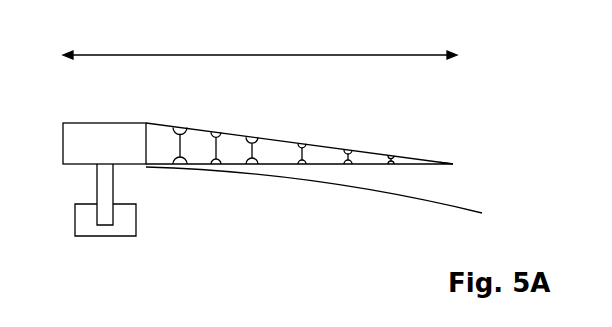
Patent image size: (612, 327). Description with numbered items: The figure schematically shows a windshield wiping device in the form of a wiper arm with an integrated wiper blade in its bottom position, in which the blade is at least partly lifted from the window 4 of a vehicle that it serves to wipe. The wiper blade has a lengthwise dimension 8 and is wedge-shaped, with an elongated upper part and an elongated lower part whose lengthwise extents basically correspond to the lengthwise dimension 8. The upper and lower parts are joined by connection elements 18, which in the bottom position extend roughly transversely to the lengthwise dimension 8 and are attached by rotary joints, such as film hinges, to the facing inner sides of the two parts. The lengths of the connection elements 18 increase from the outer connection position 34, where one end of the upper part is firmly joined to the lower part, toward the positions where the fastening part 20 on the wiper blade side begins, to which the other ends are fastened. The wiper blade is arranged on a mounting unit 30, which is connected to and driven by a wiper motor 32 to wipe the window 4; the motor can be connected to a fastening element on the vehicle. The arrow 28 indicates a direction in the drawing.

The window 4 is at (447, 206).
The lengthwise dimension 8 is at (272, 55).
The connection elements 18 is at (181, 136).
The fastening part on the wiper blade side 20 is at (180, 126).
The flow direction 28 is at (391, 112).
The mounting unit 30 is at (63, 140).
The wiper motor 32 is at (75, 217).
The outer connection position 34 is at (453, 164).